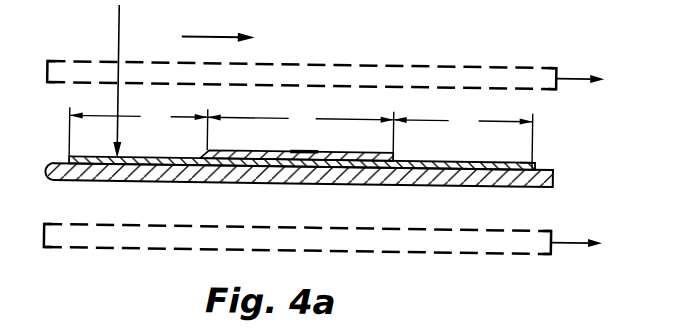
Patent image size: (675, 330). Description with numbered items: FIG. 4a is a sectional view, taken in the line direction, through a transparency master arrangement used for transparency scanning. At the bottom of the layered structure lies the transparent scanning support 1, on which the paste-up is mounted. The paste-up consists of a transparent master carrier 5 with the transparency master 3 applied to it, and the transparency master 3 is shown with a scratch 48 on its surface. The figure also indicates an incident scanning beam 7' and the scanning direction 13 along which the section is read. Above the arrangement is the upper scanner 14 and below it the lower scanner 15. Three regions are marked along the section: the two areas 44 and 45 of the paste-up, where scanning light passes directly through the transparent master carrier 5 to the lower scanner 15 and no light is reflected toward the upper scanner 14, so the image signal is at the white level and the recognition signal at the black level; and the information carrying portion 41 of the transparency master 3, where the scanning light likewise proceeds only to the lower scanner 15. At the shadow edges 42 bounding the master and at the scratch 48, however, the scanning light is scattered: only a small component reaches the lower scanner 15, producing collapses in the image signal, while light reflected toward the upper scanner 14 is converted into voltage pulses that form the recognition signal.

The transparent scanning support 1 is at (536, 180).
The transparency master 3 is at (234, 150).
The transparent master carrier 5 is at (535, 163).
The light beam 7' is at (104, 81).
The propagation direction 13 is at (216, 34).
The upper scanner 14 is at (433, 62).
The lower scanner 15 is at (355, 234).
The information carrying portion 41 is at (300, 129).
The shadow edges 42 is at (178, 163).
The area of the paste-up 44 is at (138, 131).
The area of the paste-up 45 is at (463, 139).
The scratch 48 is at (306, 147).